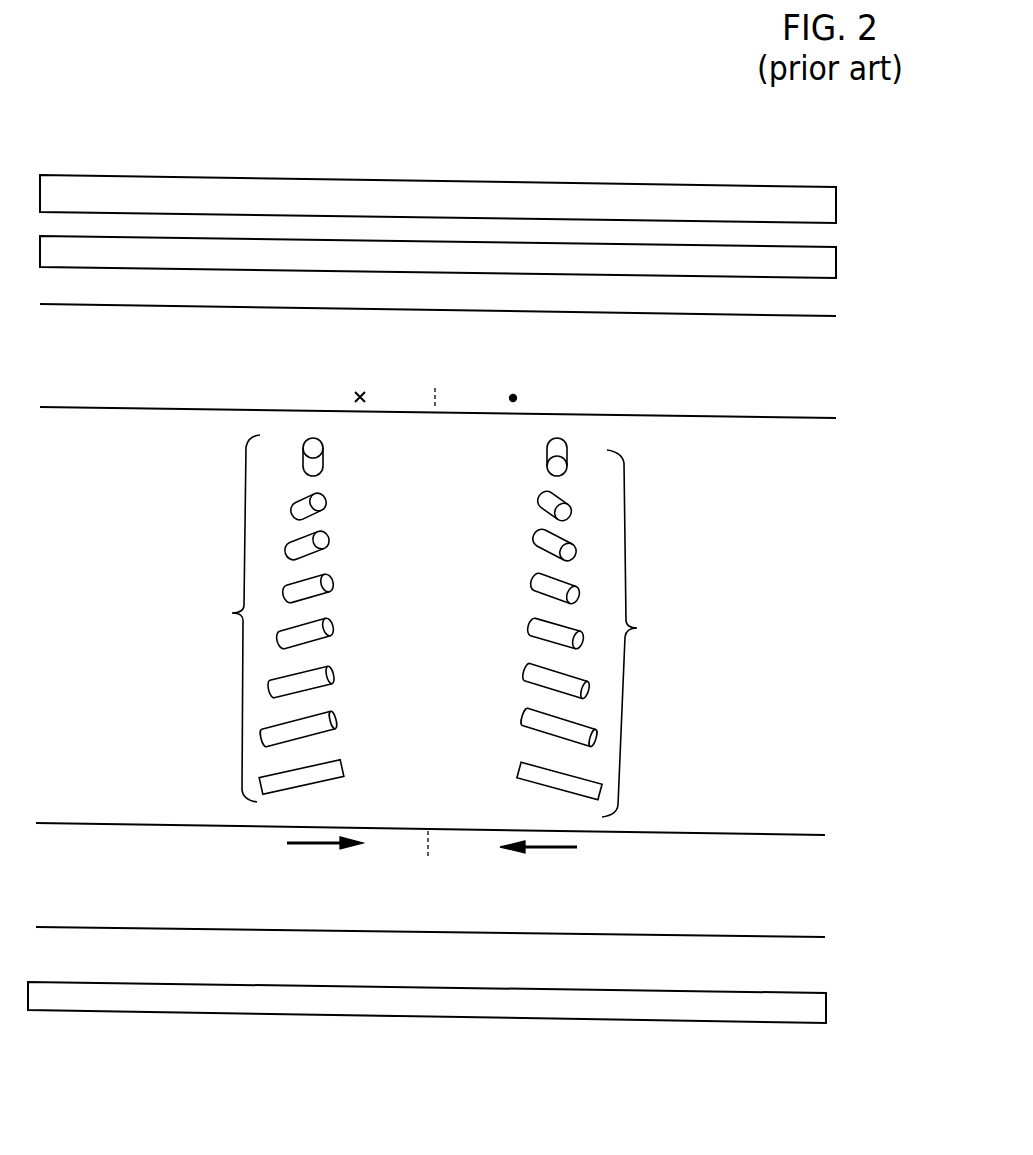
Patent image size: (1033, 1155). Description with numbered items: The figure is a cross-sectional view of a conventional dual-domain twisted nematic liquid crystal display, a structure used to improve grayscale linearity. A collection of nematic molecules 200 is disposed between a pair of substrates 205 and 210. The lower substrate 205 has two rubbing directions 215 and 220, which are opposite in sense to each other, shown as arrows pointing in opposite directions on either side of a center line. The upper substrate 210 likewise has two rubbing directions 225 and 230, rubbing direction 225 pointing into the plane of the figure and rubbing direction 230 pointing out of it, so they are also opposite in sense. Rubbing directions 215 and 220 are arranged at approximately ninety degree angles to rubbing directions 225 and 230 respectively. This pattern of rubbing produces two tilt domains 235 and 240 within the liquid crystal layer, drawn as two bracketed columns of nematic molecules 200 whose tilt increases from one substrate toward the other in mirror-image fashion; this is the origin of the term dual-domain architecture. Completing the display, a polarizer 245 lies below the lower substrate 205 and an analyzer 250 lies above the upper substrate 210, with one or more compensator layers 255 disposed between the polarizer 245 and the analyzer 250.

The nematic molecules 200 is at (527, 537).
The substrate 205 is at (813, 880).
The substrate 210 is at (812, 374).
The rubbing direction 215 is at (323, 845).
The rubbing direction 220 is at (545, 850).
The rubbing direction 225 is at (350, 397).
The rubbing direction 230 is at (513, 394).
The tilt domain 235 is at (232, 613).
The tilt domain 240 is at (637, 628).
The polarizer 245 is at (826, 1005).
The analyzer 250 is at (836, 208).
The compensator layer 255 is at (836, 262).